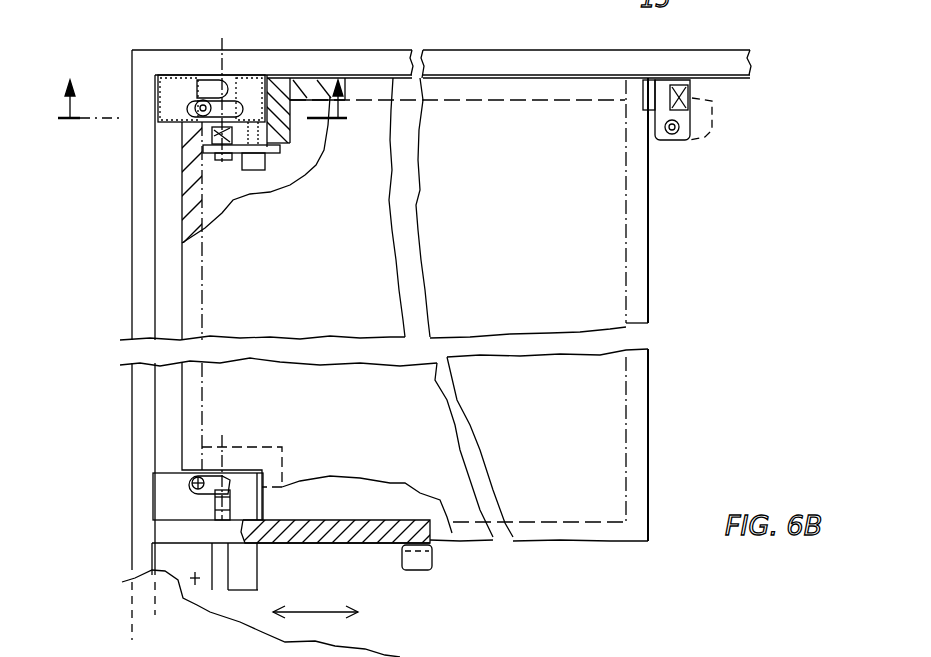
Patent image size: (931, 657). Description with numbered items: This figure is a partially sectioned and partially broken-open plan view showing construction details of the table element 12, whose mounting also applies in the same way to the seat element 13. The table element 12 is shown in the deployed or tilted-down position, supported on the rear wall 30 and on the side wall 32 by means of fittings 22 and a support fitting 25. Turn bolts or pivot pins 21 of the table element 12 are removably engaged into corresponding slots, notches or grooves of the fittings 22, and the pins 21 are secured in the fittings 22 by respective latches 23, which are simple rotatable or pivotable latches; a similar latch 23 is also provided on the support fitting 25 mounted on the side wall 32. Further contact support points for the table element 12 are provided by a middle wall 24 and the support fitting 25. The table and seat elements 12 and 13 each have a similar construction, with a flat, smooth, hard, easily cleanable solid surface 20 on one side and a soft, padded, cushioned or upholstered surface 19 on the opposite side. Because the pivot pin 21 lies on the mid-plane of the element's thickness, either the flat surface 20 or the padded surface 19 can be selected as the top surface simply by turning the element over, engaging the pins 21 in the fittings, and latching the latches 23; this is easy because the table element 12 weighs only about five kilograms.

The table element 12 is at (665, 433).
The seat element 13 is at (333, 616).
The padded surface 19 is at (461, 209).
The flat solid surface 20 is at (550, 218).
The pivot pin 21 is at (222, 88).
The fitting 22 is at (248, 97).
The latch 23 is at (207, 106).
The middle wall 24 is at (342, 530).
The support fitting 25 is at (665, 143).
The rear wall 30 is at (140, 290).
The side wall 32 is at (498, 65).